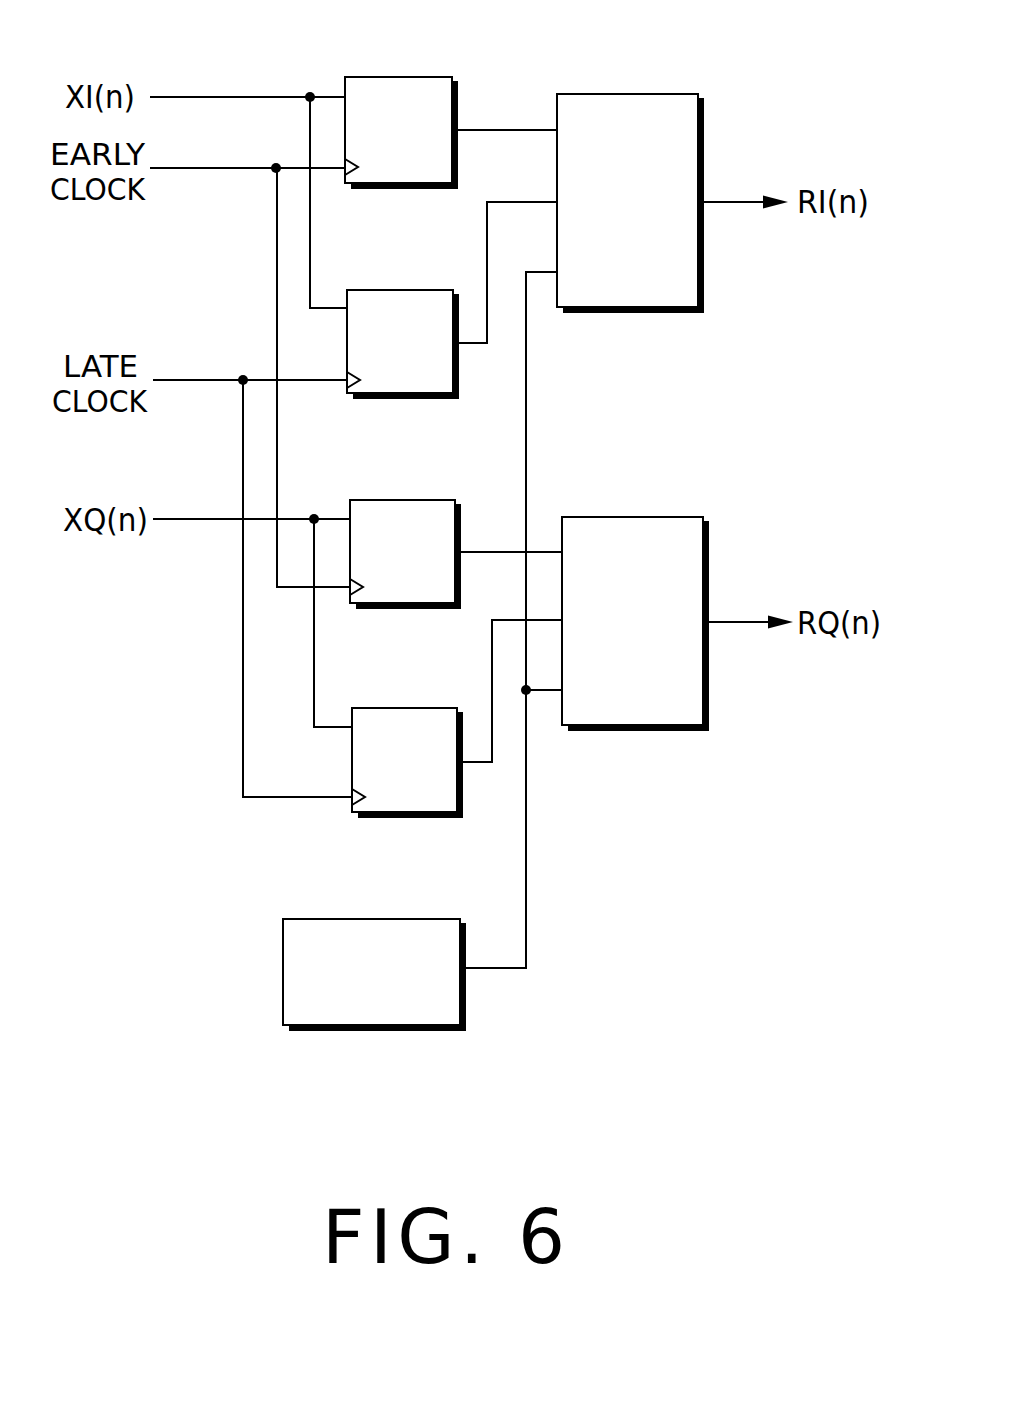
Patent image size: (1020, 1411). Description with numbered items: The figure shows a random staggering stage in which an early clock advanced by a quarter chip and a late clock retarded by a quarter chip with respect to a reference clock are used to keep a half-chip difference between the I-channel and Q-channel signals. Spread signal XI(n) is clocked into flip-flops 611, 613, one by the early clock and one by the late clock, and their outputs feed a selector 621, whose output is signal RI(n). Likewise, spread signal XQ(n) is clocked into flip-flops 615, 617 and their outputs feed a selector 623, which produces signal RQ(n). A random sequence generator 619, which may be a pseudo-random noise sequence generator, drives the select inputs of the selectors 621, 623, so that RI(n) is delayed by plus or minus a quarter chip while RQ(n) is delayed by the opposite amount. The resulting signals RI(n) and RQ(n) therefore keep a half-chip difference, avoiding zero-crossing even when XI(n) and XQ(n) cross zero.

The flip-flop 611 is at (397, 76).
The flip-flop 613 is at (400, 289).
The flip-flop 615 is at (400, 500).
The flip-flop 617 is at (405, 708).
The random sequence generator 619 is at (370, 918).
The selector 621 is at (627, 93).
The selector 623 is at (632, 516).